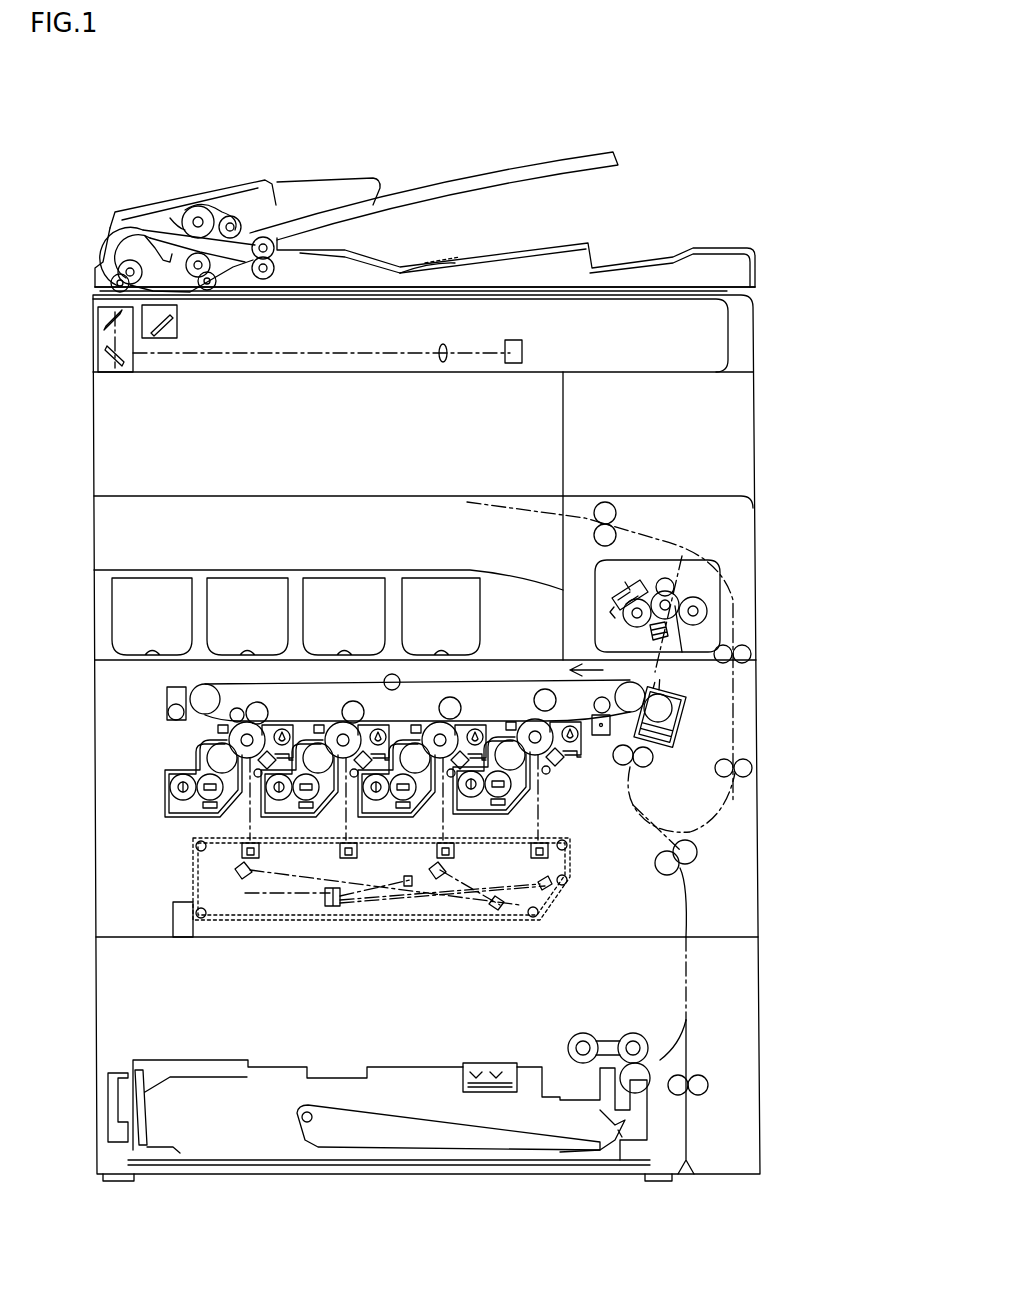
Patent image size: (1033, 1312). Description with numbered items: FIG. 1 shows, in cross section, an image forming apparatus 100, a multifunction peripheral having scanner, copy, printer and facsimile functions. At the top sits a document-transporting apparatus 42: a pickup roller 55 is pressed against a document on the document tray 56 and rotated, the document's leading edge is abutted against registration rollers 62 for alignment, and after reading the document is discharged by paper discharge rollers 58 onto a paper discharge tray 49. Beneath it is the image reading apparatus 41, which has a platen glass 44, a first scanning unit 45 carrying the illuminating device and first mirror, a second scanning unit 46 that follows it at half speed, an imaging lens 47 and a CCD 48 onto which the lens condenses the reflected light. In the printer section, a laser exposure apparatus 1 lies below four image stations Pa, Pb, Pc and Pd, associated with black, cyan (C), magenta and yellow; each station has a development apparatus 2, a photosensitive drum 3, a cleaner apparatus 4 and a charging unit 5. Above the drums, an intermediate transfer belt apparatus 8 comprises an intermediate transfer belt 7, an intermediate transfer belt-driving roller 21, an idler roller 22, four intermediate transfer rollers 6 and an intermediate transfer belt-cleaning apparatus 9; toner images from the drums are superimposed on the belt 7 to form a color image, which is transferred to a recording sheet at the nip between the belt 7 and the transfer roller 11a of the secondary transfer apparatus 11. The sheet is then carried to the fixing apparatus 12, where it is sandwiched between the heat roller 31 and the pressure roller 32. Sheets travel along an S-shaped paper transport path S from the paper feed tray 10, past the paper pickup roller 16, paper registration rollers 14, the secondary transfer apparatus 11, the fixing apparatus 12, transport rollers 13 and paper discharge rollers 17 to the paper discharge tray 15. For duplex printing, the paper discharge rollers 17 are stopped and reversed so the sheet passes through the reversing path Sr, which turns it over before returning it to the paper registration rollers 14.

The image forming apparatus 100 is at (410, 88).
The document-transporting apparatus 42 is at (660, 220).
The document tray 56 is at (483, 173).
The pickup roller 55 is at (232, 240).
The registration rollers 62 is at (130, 248).
The paper discharge tray 49 is at (513, 247).
The paper discharge rollers 58 is at (263, 287).
The image reading apparatus 41 is at (757, 326).
The platen glass 44 is at (582, 298).
The second scanning unit 46 is at (115, 372).
The first scanning unit 45 is at (165, 338).
The imaging lens 47 is at (441, 362).
The charge coupled device (CCD) 48 is at (512, 364).
The paper discharge rollers 17 is at (605, 500).
The heat roller 31 is at (670, 603).
The fixing apparatus 12 is at (722, 590).
The pressure roller 32 is at (700, 612).
The reversing path Sr is at (745, 672).
The paper discharge tray 15 is at (222, 570).
The image station Pc is at (318, 697).
The image station Pb is at (410, 698).
The image station Pa is at (517, 697).
The image station Pd is at (152, 805).
The intermediate transfer belt apparatus 8 is at (483, 677).
The idler roller 22 is at (205, 697).
The intermediate transfer rollers 6 is at (353, 710).
The intermediate transfer belt 7 is at (505, 680).
The cyan C is at (600, 665).
The intermediate transfer belt-cleaning apparatus 9 is at (165, 708).
The photosensitive drums 3 is at (516, 720).
The cleaner apparatuses 4 is at (556, 757).
The charging units 5 is at (535, 780).
The development apparatuses 2 is at (491, 810).
The laser exposure apparatus 1 is at (570, 878).
The intermediate transfer belt-driving roller 21 is at (635, 689).
The secondary transfer apparatus 11 is at (682, 724).
The transfer roller 11a is at (663, 710).
The paper registration rollers 14 is at (648, 765).
The paper transport path S is at (627, 835).
The transport rollers 13 is at (690, 850).
The paper pickup roller 16 is at (583, 1033).
The paper feed tray 10 is at (338, 1117).